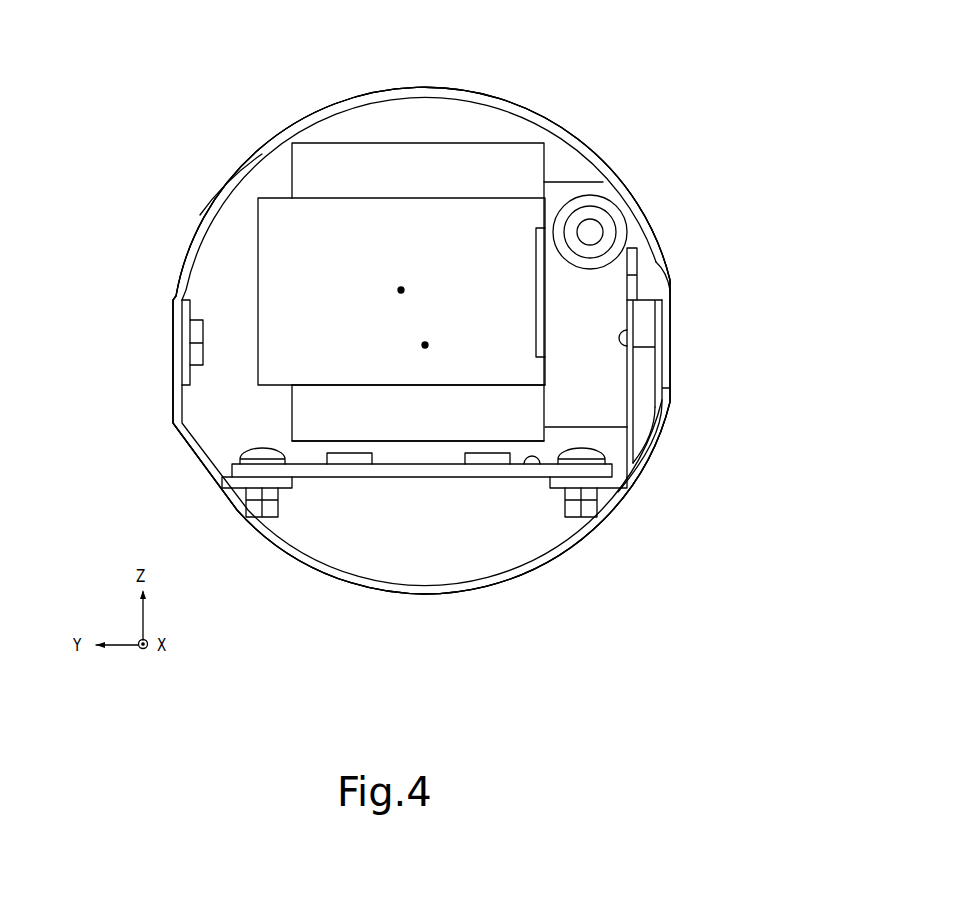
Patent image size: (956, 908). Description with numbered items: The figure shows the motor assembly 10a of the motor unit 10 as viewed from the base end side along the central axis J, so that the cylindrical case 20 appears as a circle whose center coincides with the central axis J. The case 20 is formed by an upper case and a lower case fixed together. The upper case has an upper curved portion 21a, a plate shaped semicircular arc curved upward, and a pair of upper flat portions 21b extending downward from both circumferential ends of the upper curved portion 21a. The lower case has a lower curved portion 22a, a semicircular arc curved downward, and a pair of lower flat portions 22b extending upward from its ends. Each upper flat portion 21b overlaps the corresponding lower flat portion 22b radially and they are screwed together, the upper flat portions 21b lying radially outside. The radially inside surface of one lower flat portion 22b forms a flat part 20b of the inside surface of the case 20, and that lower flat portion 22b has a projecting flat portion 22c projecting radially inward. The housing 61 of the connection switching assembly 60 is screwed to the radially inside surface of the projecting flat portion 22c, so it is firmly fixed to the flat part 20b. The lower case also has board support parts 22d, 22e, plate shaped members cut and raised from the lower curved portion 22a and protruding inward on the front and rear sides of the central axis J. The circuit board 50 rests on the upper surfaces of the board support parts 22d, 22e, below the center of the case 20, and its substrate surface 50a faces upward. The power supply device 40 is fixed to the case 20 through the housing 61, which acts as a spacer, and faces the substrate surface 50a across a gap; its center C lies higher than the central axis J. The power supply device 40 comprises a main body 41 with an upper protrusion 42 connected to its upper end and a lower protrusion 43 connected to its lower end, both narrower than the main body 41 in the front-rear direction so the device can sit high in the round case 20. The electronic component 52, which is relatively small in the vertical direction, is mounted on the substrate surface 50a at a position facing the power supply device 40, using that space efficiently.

The drive device 10 is at (650, 100).
The motor assembly 10a is at (585, 125).
The case 20 is at (653, 224).
The flat part 20b is at (633, 348).
The upper curved portion 21a is at (235, 182).
The upper flat portions 21b is at (173, 353).
The lower curved portion 22a is at (622, 479).
The lower flat portions 22b is at (658, 412).
The projecting flat portion 22c is at (640, 323).
The board support part 22d is at (607, 480).
The board support part 22e is at (236, 484).
The power supply device 40 is at (459, 140).
The main body 41 is at (278, 251).
The upper protrusion 42 is at (505, 165).
The lower protrusion 43 is at (520, 417).
The circuit board 50 is at (500, 473).
The substrate surface 50a is at (536, 462).
The electronic component 52 is at (485, 462).
The connection switching assembly 60 is at (582, 177).
The housing 61 is at (593, 287).
The center C is at (401, 290).
The central axis J is at (425, 345).